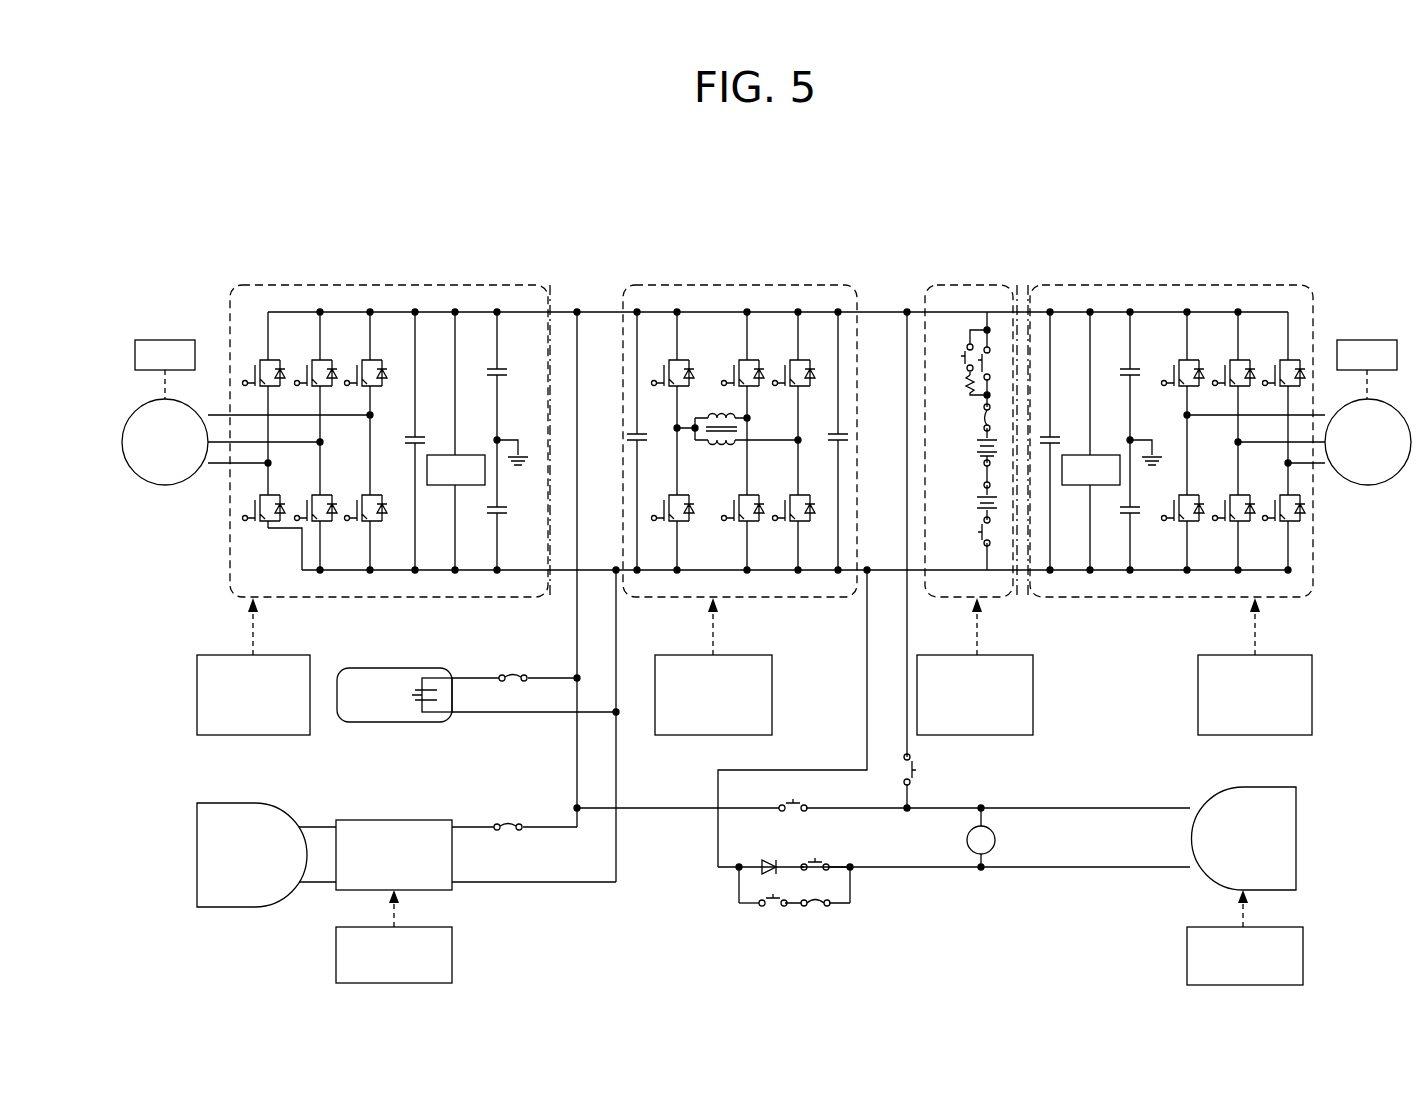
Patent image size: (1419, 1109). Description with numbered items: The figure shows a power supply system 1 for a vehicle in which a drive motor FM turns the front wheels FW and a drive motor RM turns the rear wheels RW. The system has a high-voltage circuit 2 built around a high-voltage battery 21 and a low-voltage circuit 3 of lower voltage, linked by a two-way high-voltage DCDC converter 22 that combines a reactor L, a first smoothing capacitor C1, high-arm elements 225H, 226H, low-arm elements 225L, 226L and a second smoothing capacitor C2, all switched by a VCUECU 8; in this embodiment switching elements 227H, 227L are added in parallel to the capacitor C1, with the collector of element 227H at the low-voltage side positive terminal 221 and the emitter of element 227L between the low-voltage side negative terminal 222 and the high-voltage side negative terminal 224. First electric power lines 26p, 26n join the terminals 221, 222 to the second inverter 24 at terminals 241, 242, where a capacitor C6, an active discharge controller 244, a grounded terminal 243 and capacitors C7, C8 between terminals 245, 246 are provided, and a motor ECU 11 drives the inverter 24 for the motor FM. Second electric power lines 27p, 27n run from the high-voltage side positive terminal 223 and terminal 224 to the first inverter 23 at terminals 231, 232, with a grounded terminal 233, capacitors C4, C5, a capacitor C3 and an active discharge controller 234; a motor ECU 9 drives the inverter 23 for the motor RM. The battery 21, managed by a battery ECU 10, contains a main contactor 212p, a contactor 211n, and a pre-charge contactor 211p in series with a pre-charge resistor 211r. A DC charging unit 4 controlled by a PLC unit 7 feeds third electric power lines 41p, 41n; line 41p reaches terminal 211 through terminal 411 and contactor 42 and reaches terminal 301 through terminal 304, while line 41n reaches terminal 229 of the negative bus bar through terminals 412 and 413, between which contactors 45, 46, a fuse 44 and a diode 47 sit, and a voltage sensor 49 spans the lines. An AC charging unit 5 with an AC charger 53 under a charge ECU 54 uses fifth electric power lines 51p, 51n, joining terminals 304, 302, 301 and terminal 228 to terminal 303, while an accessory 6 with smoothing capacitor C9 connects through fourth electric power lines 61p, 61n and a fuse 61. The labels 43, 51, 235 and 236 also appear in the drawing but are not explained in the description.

The power supply system 1 is at (1332, 132).
The high-voltage circuit 2 is at (1088, 195).
The low-voltage circuit 3 is at (460, 195).
The DC charging unit 4 is at (1297, 840).
The AC charging unit 5 is at (258, 803).
The accessory 6 is at (394, 696).
The PLC unit 7 is at (1303, 958).
The VCUECU 8 is at (772, 662).
The motor ECU 9 is at (1312, 662).
The battery ECU 10 is at (1033, 678).
The motor ECU 11 is at (310, 662).
The high-voltage battery 21 is at (961, 255).
The high-voltage DCDC converter 22 is at (816, 255).
The first inverter 23 is at (1259, 255).
The second inverter 24 is at (364, 255).
The first electric power line 26p is at (580, 305).
The first electric power line 26n is at (616, 585).
The second electric power line 27p is at (1018, 285).
The second electric power line 27n is at (1028, 590).
The third electric power line 41p is at (1052, 806).
The third electric power line 41n is at (1108, 868).
The contactor 42 is at (916, 770).
The contactor 43 is at (804, 805).
The fuse 44 is at (815, 908).
The contactor 45 is at (772, 908).
The contactor 46 is at (830, 860).
The diode 47 is at (765, 862).
The voltage sensor 49 is at (995, 840).
The charger relay 51 is at (525, 826).
The fifth electric power line 51p is at (476, 827).
The fifth electric power line 51n is at (465, 882).
The AC charger 53 is at (410, 820).
The charge ECU 54 is at (452, 958).
The fuse 61 is at (530, 676).
The fourth electric power line 61p is at (478, 678).
The fourth electric power line 61n is at (455, 714).
The terminal 211 is at (924, 412).
The pre-charge contactor 211p is at (968, 340).
The pre-charge resistor 211r is at (966, 392).
The contactor 211n is at (980, 530).
The main contactor 212p is at (990, 325).
The low-voltage side positive terminal 221 is at (637, 300).
The low-voltage side negative terminal 222 is at (637, 570).
The high-voltage side positive terminal 223 is at (732, 426).
The high-voltage side negative terminal 224 is at (748, 585).
The high-arm element 225H is at (722, 340).
The low-arm element 225L is at (720, 550).
The high-arm element 226H is at (775, 340).
The low-arm element 226L is at (778, 550).
The switching element 227H is at (657, 340).
The switching element 227L is at (662, 550).
The terminal 228 is at (535, 727).
The terminal 229 is at (867, 580).
The terminal 231 is at (1130, 305).
The terminal 232 is at (1130, 570).
The grounded terminal 233 is at (1135, 437).
The active discharge controller 234 is at (1093, 455).
The rear inverter positive terminal 235 is at (1050, 305).
The rear inverter negative terminal 236 is at (1050, 570).
The terminal 241 is at (415, 312).
The terminal 242 is at (415, 570).
The grounded terminal 243 is at (500, 437).
The active discharge controller 244 is at (460, 455).
The terminal 245 is at (497, 312).
The terminal 246 is at (497, 570).
The terminal 301 is at (552, 300).
The terminal 302 is at (590, 665).
The terminal 303 is at (550, 597).
The terminal 304 is at (580, 812).
The terminal 411 is at (910, 812).
The terminal 412 is at (853, 870).
The terminal 413 is at (736, 870).
The first smoothing capacitor C1 is at (627, 435).
The second smoothing capacitor C2 is at (830, 435).
The capacitor C3 is at (1060, 437).
The capacitor C4 is at (1140, 368).
The capacitor C5 is at (1140, 515).
The capacitor C6 is at (425, 437).
The capacitor C7 is at (507, 368).
The capacitor C8 is at (507, 515).
The smoothing capacitor C9 is at (418, 712).
The reactor L is at (712, 390).
The drive motor FM is at (168, 485).
The drive motor RM is at (1368, 485).
The front wheels FW is at (165, 369).
The rear wheels RW is at (1367, 369).